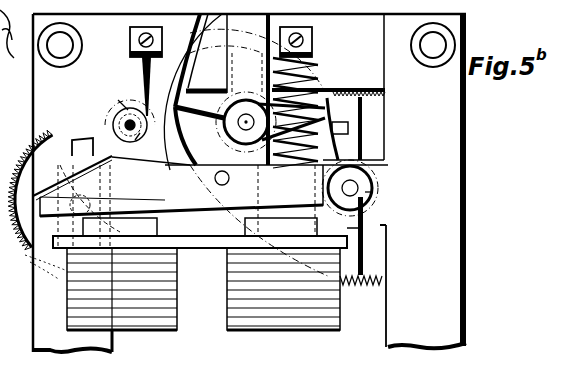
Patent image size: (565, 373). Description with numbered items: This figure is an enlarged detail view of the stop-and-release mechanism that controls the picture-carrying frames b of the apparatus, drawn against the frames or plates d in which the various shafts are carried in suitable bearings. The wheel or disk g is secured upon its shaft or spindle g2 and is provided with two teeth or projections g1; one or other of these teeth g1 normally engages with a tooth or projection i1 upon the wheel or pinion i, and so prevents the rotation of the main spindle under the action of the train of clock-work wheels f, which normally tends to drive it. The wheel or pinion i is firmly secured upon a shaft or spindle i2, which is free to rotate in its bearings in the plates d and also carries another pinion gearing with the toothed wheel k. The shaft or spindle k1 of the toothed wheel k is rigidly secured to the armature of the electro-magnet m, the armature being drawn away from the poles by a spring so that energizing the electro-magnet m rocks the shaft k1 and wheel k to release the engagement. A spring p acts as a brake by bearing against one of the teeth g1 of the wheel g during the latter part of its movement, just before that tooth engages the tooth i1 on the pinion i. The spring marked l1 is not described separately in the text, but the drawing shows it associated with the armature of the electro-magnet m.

The spring p is at (160, 54).
The wheel or disk g is at (196, 80).
The teeth or projections g1 is at (368, 128).
The shaft or spindle g2 is at (246, 116).
The wheel or pinion i is at (118, 122).
The tooth or projection i1 is at (126, 110).
The shaft or spindle i2 is at (394, 193).
The spring l1 is at (312, 80).
The toothed wheel k is at (20, 254).
The shaft or spindle k1 is at (150, 187).
The frames or plates d is at (249, 183).
The electro-magnet m is at (203, 289).
The frames b is at (207, 200).
The train of clock-work wheels f is at (363, 286).